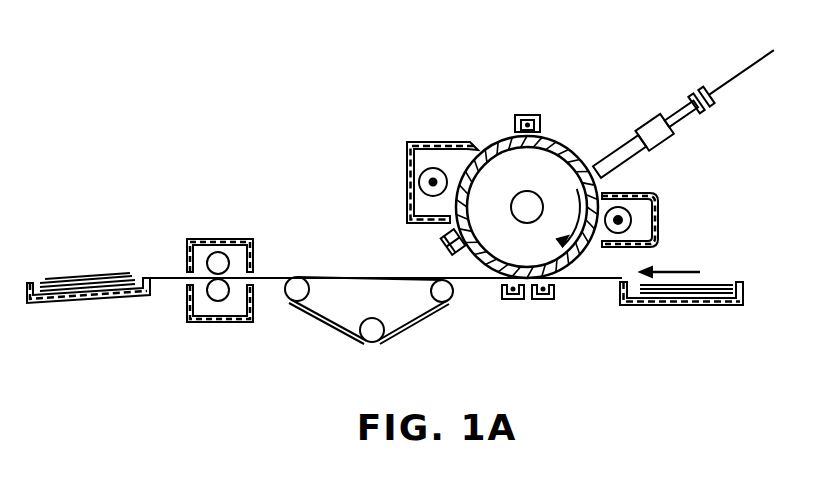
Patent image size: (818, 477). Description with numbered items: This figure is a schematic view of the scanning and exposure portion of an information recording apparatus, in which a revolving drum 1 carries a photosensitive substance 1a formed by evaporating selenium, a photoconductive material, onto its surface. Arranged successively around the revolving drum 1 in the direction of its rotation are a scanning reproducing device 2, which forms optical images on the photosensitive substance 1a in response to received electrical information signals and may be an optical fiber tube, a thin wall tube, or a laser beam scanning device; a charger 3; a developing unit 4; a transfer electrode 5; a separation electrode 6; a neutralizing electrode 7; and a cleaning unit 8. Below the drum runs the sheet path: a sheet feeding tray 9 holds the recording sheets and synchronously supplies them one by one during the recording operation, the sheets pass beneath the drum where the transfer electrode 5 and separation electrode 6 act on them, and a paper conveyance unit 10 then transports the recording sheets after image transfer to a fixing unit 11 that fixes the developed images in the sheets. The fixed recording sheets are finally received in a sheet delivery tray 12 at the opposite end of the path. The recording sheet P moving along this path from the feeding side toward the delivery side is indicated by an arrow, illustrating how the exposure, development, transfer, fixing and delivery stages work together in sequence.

The revolving drum 1 is at (498, 158).
The photosensitive substance 1a is at (500, 245).
The scanning reproducing device 2 is at (613, 147).
The charger 3 is at (529, 114).
The developing unit 4 is at (659, 220).
The transfer electrode 5 is at (544, 302).
The separation electrode 6 is at (511, 302).
The neutralizing electrode 7 is at (444, 250).
The cleaning unit 8 is at (407, 163).
The sheet feeding tray 9 is at (707, 306).
The paper conveyance unit 10 is at (342, 310).
The fixing unit 11 is at (218, 323).
The sheet delivery tray 12 is at (100, 297).
The recording paper P is at (716, 272).